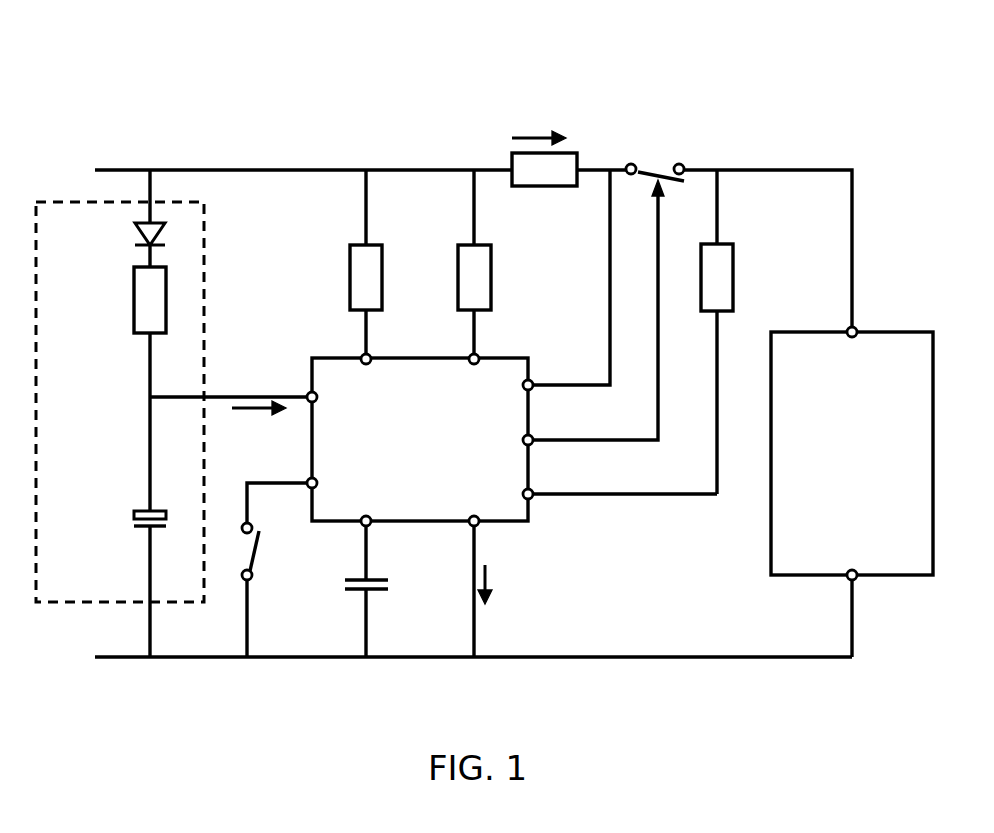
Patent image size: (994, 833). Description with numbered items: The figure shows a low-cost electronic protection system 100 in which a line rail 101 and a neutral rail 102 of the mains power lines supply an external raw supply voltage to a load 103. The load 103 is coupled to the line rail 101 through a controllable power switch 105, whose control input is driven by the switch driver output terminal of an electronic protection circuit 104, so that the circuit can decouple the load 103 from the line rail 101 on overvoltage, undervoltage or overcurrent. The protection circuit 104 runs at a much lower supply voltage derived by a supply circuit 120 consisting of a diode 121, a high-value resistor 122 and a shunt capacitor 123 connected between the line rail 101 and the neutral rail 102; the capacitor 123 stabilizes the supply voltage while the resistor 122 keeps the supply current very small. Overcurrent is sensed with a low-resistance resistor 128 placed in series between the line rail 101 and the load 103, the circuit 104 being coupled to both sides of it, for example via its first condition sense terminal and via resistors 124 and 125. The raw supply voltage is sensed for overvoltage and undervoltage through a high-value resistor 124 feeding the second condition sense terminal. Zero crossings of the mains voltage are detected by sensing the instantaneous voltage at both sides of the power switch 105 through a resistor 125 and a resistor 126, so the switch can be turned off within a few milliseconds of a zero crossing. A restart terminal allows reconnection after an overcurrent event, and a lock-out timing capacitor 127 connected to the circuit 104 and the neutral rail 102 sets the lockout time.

The electronic protection system 100 is at (117, 93).
The line rail 101 is at (88, 158).
The neutral rail 102 is at (82, 672).
The load 103 is at (852, 492).
The electronic protection circuit 104 is at (479, 413).
The controllable power switch 105 is at (651, 162).
The supply circuit 120 is at (208, 222).
The diode 121 is at (133, 250).
The resistor 122 is at (136, 338).
The capacitor 123 is at (134, 543).
The resistor 124 is at (377, 233).
The resistor 125 is at (453, 282).
The resistor 126 is at (727, 238).
The lock-out timing capacitor 127 is at (377, 596).
The resistor 128 is at (545, 183).